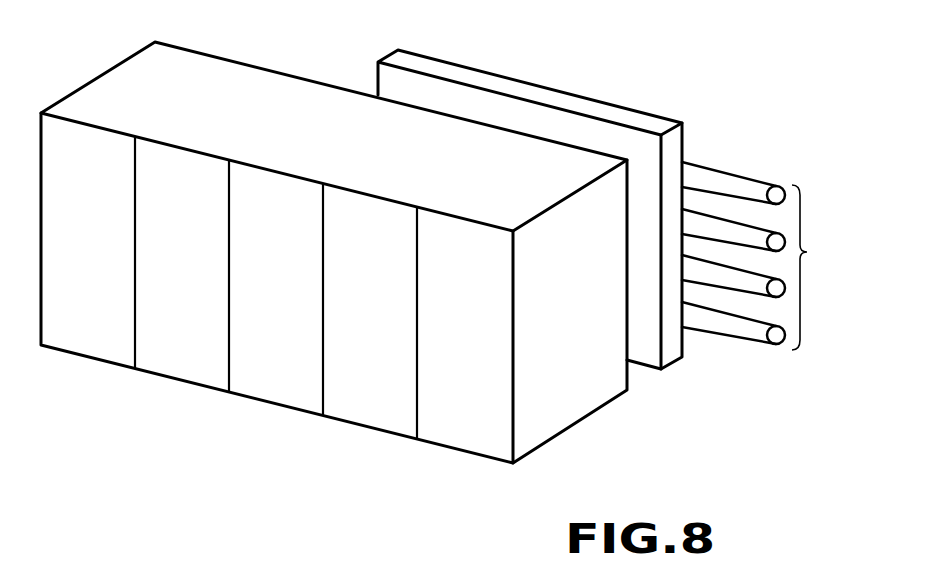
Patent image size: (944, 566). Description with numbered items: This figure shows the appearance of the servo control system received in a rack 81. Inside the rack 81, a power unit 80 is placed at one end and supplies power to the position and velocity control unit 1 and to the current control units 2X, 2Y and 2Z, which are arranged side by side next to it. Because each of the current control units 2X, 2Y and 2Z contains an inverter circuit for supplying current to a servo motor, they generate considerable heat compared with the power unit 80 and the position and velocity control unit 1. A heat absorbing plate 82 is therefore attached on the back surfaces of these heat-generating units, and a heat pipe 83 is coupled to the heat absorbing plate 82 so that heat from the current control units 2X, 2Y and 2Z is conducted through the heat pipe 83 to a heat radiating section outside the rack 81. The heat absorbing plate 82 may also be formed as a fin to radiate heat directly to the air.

The power unit 80 is at (88, 348).
The rack 81 is at (80, 97).
The heat absorbing plate 82 is at (437, 68).
The heat pipe 83 is at (800, 195).
The position and velocity control unit 1 is at (185, 372).
The current control unit 2X is at (278, 395).
The current control unit 2Y is at (368, 417).
The current control unit 2Z is at (462, 442).